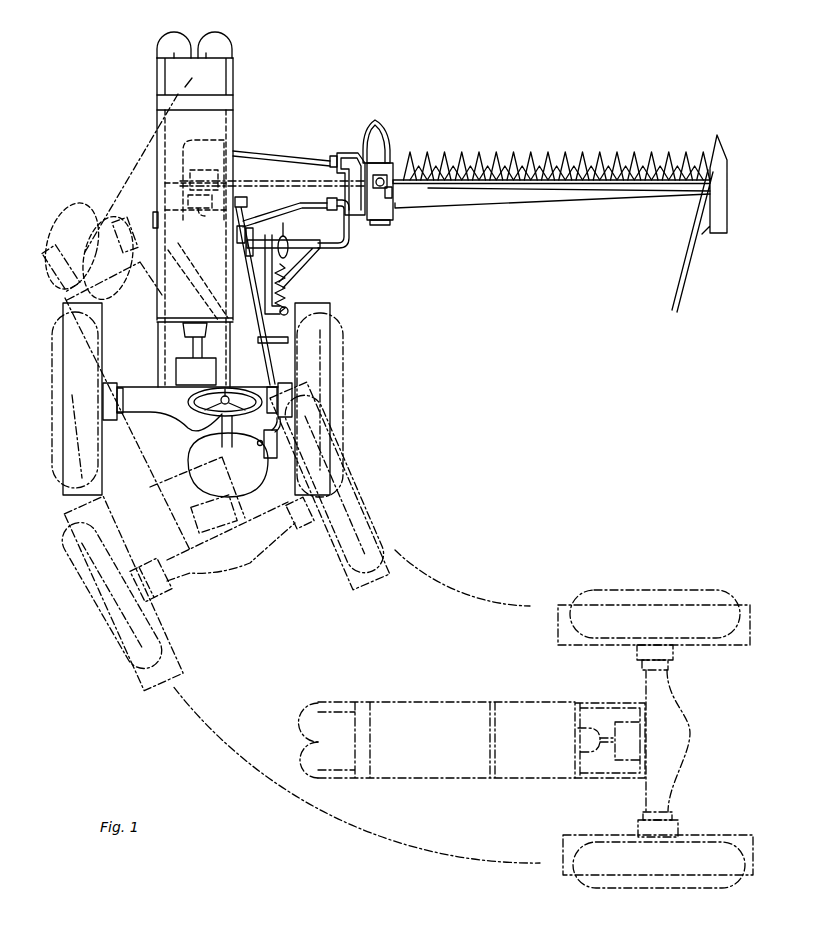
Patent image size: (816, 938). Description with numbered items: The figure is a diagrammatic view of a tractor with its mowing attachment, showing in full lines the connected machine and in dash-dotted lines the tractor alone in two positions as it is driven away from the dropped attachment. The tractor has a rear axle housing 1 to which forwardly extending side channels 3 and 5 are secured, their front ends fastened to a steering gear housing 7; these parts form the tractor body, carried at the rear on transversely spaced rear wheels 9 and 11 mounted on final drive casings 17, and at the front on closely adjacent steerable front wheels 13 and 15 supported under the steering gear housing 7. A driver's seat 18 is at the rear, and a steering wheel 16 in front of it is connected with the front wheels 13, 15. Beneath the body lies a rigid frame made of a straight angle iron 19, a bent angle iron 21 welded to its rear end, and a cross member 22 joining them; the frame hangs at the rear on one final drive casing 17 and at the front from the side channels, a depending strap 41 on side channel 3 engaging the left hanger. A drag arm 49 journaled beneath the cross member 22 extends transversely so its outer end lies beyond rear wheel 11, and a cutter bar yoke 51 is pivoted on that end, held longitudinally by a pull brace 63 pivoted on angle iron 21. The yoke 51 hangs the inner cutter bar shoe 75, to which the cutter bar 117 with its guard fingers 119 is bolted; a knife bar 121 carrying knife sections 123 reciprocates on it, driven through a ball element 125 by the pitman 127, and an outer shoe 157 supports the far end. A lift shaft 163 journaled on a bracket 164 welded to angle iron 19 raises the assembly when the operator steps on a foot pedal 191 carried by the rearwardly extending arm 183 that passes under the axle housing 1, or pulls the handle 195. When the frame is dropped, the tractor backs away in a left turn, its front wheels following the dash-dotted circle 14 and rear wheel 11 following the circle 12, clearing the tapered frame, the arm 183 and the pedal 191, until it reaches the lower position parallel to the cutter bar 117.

The rear axle housing 1 is at (148, 408).
The side channel 3 is at (158, 158).
The side channel 5 is at (233, 136).
The steering gear housing 7 is at (224, 78).
The rear wheel 9 is at (53, 347).
The rear wheel 11 is at (340, 380).
The circle 12 is at (442, 588).
The front wheel 13 is at (157, 48).
The circle 14 is at (126, 180).
The front wheel 15 is at (229, 46).
The steering wheel 16 is at (243, 388).
The final drive casing 17 is at (292, 387).
The driver's seat 18 is at (195, 453).
The angle iron 19 is at (247, 274).
The bent angle iron 21 is at (203, 280).
The cross member 22 is at (195, 180).
The depending strap 41 is at (153, 217).
The drag arm 49 is at (288, 214).
The cutter bar yoke 51 is at (362, 234).
The pull brace 63 is at (283, 158).
The cutter bar shoe 75 is at (387, 140).
The cutter bar 117 is at (435, 204).
The guard fingers 119 is at (466, 152).
The knife bar 121 is at (397, 177).
The knife sections 123 is at (576, 158).
The ball element 125 is at (378, 144).
The pitman 127 is at (280, 184).
The outer shoe 157 is at (722, 167).
The lift shaft 163 is at (337, 244).
The bracket 164 is at (297, 240).
The arm 183 is at (277, 428).
The foot pedal 191 is at (273, 458).
The handle 195 is at (257, 343).